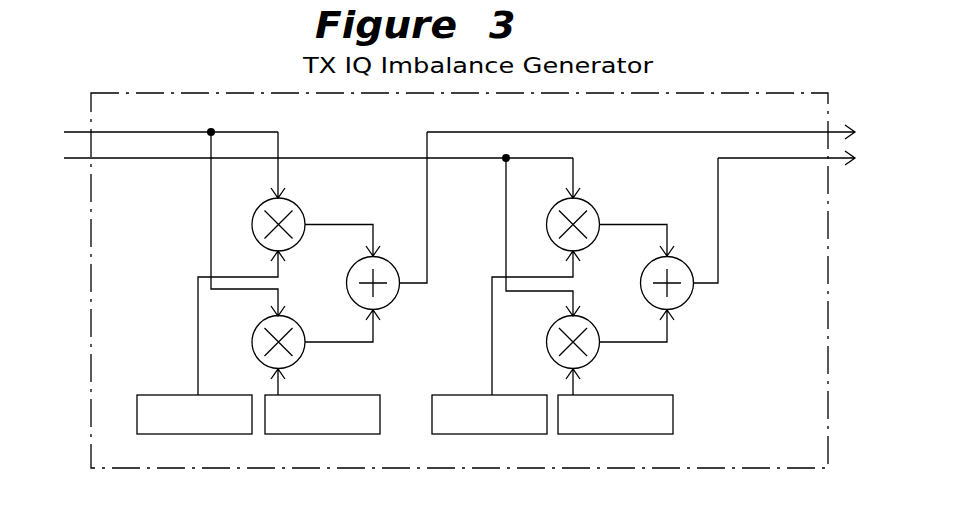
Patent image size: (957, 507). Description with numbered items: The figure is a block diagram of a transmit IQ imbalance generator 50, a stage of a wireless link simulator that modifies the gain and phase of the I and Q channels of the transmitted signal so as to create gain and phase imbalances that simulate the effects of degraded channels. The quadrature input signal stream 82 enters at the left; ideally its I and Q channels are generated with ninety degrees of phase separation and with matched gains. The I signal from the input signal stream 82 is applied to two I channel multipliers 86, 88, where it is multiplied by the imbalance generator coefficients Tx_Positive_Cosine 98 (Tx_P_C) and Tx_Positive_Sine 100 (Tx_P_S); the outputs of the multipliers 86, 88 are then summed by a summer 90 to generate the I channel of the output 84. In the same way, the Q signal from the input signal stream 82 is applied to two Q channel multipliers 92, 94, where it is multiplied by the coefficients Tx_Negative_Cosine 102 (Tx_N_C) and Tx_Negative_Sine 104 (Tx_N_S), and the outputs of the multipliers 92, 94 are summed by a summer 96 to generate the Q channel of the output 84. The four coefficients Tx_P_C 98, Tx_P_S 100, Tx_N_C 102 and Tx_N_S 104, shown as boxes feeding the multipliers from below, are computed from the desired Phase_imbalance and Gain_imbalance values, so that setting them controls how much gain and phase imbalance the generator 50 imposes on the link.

The transmit IQ imbalance generator 50 is at (459, 265).
The quadrature input signal stream 82 is at (301, 128).
The output 84 is at (655, 128).
The I channel multiplier 86 is at (264, 224).
The I channel multiplier 88 is at (264, 339).
The summer 90 is at (355, 283).
The Q channel multiplier 92 is at (561, 224).
The Q channel multiplier 94 is at (561, 339).
The summer 96 is at (649, 283).
The Tx_Positive_Cosine coefficient 98 is at (194, 428).
The Tx_Positive_Sine coefficient 100 is at (322, 428).
The Tx_Negative_Cosine coefficient 102 is at (489, 428).
The Tx_Negative_Sine coefficient 104 is at (615, 428).